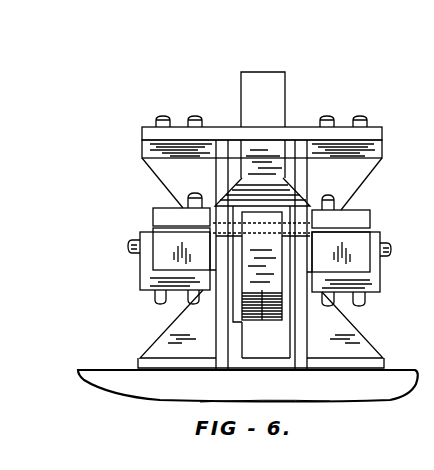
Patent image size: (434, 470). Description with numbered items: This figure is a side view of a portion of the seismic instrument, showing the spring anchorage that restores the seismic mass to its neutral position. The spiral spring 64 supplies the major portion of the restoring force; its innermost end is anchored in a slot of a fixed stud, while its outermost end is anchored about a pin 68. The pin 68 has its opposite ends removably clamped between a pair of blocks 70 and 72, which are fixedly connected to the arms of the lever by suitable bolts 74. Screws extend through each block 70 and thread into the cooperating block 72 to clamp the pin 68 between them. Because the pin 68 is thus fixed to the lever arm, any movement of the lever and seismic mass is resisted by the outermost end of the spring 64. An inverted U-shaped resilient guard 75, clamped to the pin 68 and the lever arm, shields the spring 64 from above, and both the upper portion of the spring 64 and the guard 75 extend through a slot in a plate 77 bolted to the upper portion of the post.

The spiral spring 64 is at (262, 318).
The pin 68 is at (211, 209).
The block 70 is at (157, 220).
The block 72 is at (160, 250).
The bolts 74 is at (130, 247).
The resilient guard 75 is at (267, 83).
The plate 77 is at (208, 137).